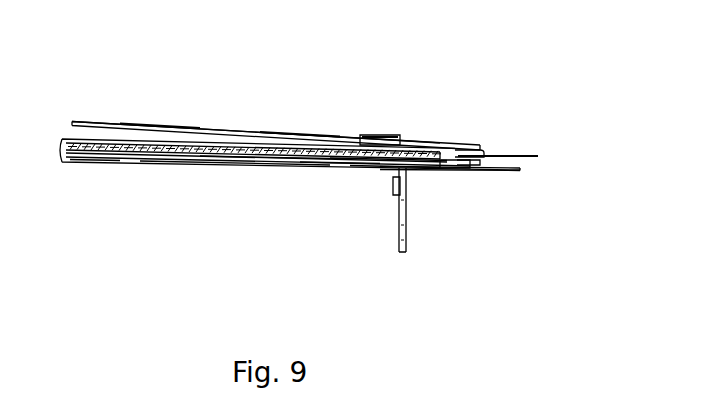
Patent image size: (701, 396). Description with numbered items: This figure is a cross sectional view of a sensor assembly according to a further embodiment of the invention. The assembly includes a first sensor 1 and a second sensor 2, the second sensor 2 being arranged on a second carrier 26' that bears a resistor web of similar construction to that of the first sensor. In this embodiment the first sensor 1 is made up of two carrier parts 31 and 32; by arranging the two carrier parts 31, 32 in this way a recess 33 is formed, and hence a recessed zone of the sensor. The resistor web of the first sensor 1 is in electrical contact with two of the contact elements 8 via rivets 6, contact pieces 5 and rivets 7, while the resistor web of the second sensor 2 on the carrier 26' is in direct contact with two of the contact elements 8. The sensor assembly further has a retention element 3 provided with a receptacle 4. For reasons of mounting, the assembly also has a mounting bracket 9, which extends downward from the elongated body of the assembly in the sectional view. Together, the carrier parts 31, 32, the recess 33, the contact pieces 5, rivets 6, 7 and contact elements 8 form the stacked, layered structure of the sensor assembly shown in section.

The first sensor 1 is at (138, 118).
The second sensor 2 is at (156, 173).
The retention element 3 is at (62, 148).
The receptacle 4 is at (70, 141).
The contact piece 5 is at (509, 165).
The rivet 6 is at (466, 146).
The rivet 7 is at (463, 170).
The contact element 8 is at (512, 170).
The mounting bracket 9 is at (404, 252).
The second carrier 26' is at (340, 198).
The carrier part 31 is at (236, 130).
The carrier part 32 is at (433, 148).
The recess 33 is at (406, 132).